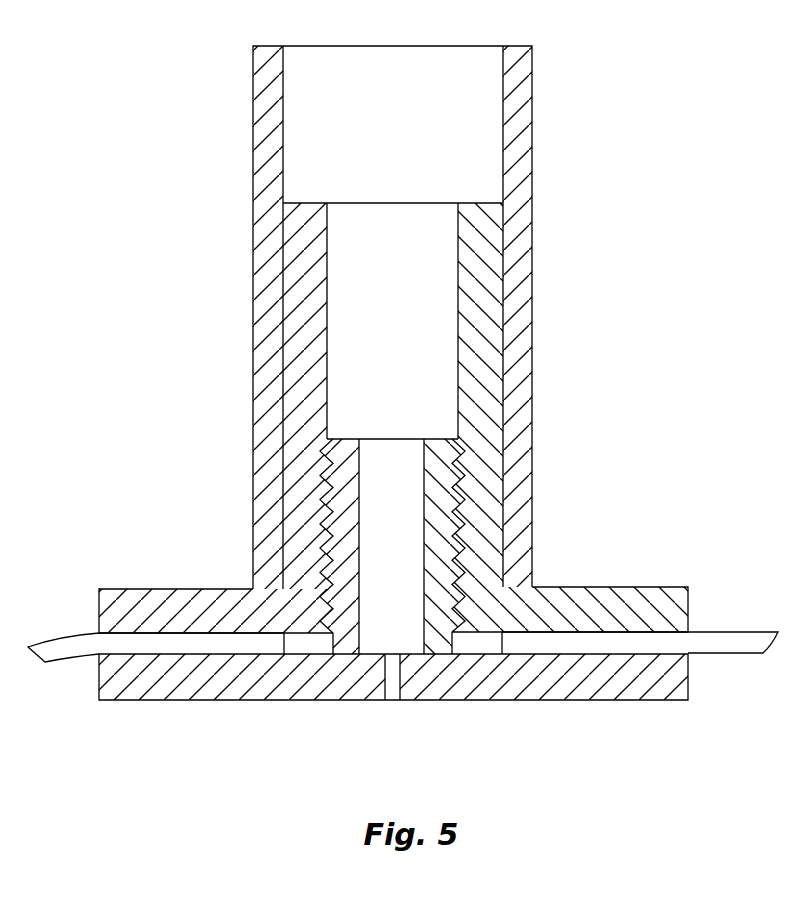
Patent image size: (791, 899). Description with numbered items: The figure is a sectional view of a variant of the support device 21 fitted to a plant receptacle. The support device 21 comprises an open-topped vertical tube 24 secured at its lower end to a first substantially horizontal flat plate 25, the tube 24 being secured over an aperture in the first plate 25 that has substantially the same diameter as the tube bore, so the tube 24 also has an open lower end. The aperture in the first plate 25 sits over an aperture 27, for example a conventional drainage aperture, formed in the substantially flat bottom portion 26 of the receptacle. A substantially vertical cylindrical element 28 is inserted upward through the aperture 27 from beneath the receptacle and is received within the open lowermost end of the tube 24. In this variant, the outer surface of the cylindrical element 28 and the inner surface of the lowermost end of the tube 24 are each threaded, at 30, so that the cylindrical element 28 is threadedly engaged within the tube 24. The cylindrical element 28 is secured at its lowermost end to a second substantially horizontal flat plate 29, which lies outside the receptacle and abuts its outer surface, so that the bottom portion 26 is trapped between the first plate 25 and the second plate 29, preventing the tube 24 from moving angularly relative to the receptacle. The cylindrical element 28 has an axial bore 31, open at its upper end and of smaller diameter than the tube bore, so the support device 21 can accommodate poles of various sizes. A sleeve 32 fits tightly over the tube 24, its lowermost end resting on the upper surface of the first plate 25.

The support device 21 is at (403, 414).
The sleeve 32 is at (533, 145).
The open-topped vertical tube 24 is at (490, 308).
The threads 30 is at (327, 503).
The cylindrical element 28 is at (440, 513).
The axial bore 31 is at (400, 640).
The first substantially horizontal flat plate 25 is at (133, 604).
The second substantially horizontal flat plate 29 is at (203, 688).
The bottom portion 26 is at (730, 645).
The aperture 27 is at (477, 643).